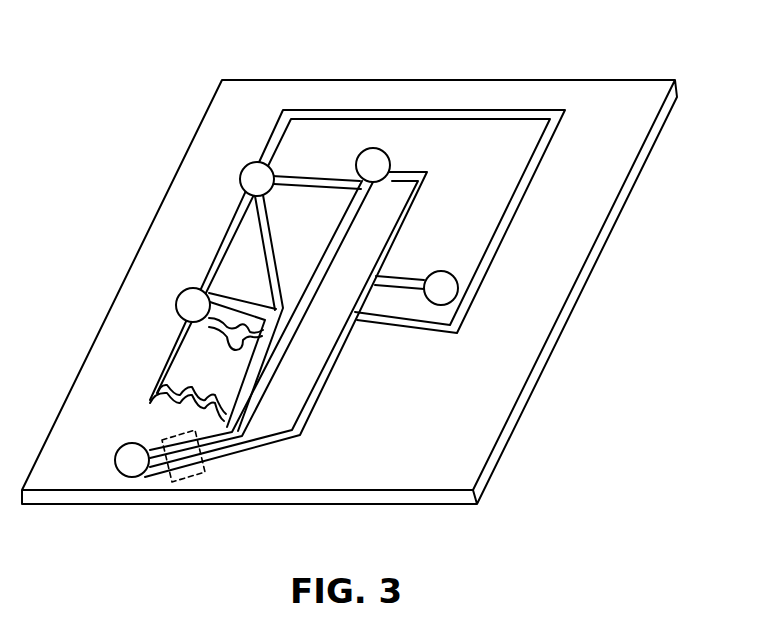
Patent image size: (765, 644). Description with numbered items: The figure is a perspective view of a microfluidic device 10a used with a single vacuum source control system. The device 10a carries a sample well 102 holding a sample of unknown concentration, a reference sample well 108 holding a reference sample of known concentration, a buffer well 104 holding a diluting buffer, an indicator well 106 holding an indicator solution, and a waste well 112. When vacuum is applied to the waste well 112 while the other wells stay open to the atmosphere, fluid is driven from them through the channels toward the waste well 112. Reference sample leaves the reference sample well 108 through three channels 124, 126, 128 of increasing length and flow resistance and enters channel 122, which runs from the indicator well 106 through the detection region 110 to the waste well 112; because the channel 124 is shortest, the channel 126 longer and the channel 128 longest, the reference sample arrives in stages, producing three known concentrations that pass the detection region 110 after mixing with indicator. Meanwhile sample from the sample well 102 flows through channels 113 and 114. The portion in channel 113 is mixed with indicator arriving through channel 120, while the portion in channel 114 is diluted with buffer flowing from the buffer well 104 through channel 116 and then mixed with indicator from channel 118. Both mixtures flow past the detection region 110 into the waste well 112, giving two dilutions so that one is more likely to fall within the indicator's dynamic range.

The microfluidic device 10a is at (505, 78).
The sample well 102 is at (384, 152).
The buffer well 104 is at (447, 283).
The indicator well 106 is at (266, 176).
The reference sample well 108 is at (190, 300).
The detection region 110 is at (205, 470).
The waste well 112 is at (118, 460).
The channel 113 is at (307, 350).
The channel 114 is at (409, 202).
The channel 116 is at (418, 284).
The channel 118 is at (494, 258).
The channel 120 is at (289, 188).
The channel 122 is at (257, 228).
The channel 124 is at (236, 297).
The channel 126 is at (212, 325).
The channel 128 is at (150, 402).